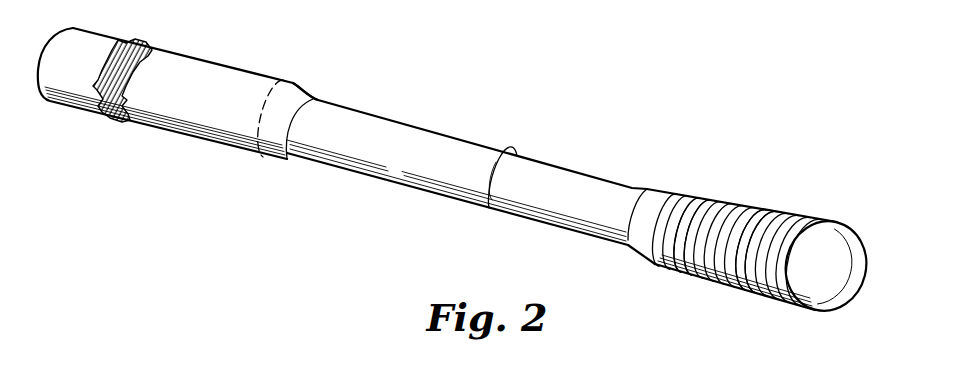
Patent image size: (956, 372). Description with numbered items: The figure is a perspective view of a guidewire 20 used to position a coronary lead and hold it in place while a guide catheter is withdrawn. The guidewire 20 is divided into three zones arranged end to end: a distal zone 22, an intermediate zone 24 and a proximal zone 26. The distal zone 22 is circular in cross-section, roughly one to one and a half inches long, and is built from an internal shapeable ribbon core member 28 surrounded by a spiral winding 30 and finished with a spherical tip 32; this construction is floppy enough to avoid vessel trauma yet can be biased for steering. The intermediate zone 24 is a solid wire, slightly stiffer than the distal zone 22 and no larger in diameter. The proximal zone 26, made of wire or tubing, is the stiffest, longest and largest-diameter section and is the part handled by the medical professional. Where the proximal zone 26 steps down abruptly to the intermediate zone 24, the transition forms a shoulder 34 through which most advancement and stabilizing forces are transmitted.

The guidewire 20 is at (659, 118).
The distal zone 22 is at (803, 327).
The intermediate zone 24 is at (507, 245).
The proximal zone 26 is at (279, 186).
The internal shapeable ribbon core member 28 is at (775, 186).
The spiral winding 30 is at (707, 192).
The spherical tip 32 is at (847, 308).
The shoulder 34 is at (303, 84).